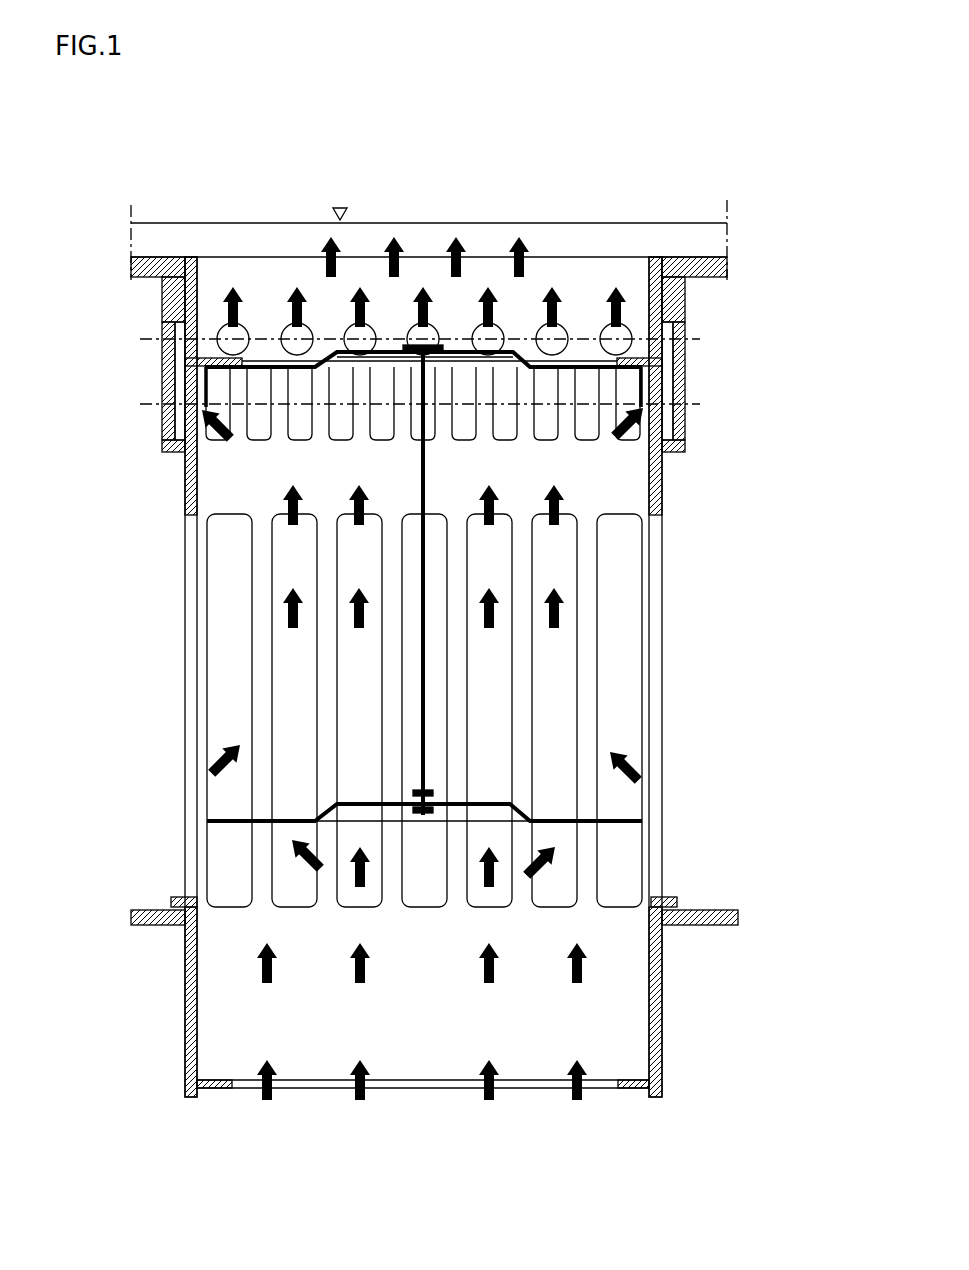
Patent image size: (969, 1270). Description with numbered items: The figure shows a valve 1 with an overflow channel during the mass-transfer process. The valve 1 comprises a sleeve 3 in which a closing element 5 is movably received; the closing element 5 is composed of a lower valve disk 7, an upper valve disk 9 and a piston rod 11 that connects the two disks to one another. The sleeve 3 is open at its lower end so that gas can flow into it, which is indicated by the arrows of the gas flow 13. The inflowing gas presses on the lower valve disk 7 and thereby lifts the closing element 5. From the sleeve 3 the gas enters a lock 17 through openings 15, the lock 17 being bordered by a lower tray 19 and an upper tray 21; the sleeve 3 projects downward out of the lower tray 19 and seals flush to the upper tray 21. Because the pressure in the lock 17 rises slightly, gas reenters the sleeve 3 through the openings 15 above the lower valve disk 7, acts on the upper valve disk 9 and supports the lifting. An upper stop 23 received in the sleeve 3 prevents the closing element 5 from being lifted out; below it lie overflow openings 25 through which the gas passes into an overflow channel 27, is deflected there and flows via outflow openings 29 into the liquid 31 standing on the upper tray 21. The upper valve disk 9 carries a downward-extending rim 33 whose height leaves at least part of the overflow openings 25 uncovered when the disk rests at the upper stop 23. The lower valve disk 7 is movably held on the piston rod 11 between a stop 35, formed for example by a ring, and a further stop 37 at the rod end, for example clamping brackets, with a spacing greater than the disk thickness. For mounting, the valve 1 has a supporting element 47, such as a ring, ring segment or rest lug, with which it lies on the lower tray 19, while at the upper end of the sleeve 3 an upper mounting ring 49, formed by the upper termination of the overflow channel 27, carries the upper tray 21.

The valve 1 is at (118, 237).
The sleeve 3 is at (657, 485).
The closing element 5 is at (432, 710).
The lower valve disk 7 is at (353, 800).
The upper valve disk 9 is at (383, 355).
The piston rod 11 is at (420, 653).
The gas flow 13 is at (360, 1090).
The opening 15 is at (286, 900).
The lock 17 is at (732, 585).
The lower tray 19 is at (715, 925).
The upper tray 21 is at (712, 267).
The upper stop 23 is at (185, 362).
The overflow opening 25 is at (257, 395).
The overflow channel 27 is at (667, 418).
The outflow opening 29 is at (602, 335).
The liquid 31 is at (275, 270).
The downward-extending rim 33 is at (643, 382).
The stop 35 is at (433, 792).
The further stop 37 is at (430, 814).
The supporting element 47 is at (665, 900).
The upper mounting ring 49 is at (675, 272).